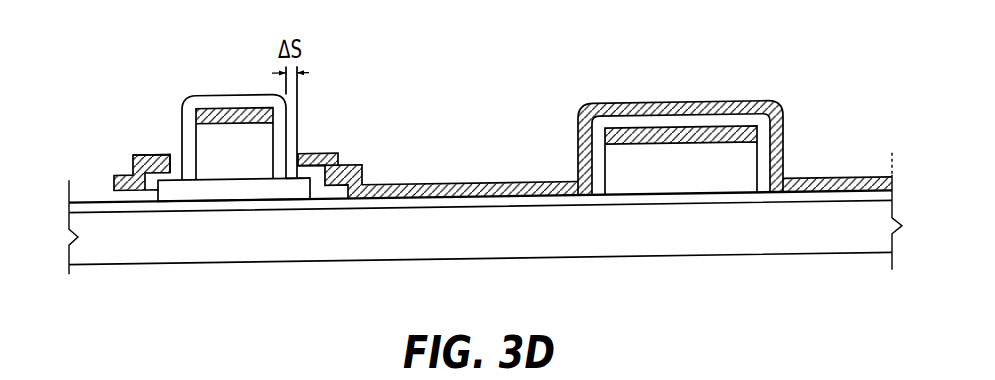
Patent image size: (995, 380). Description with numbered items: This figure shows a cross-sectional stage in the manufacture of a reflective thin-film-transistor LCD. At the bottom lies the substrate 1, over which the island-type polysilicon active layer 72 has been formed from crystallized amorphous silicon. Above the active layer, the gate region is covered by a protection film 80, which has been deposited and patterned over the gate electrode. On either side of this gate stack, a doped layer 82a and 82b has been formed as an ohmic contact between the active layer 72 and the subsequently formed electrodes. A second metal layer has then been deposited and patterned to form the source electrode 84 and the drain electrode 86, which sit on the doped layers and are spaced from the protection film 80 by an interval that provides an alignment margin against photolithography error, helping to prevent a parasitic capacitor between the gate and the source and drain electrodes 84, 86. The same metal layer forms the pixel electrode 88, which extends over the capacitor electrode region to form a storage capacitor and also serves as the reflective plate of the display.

The substrate 1 is at (485, 218).
The active layer 72 is at (237, 190).
The protection film 80 is at (230, 92).
The doped layer 82a is at (322, 151).
The doped layer 82b is at (160, 150).
The source electrode 84 is at (115, 170).
The drain electrode 86 is at (343, 155).
The pixel electrode 88 is at (488, 182).